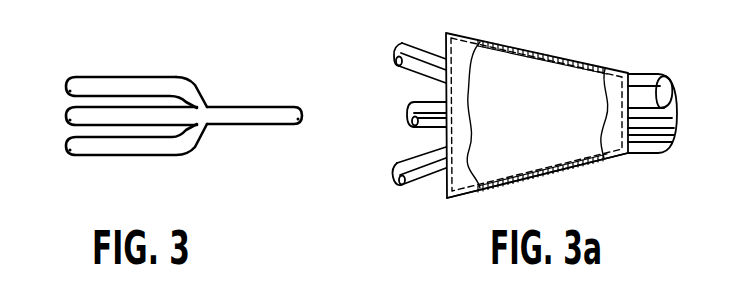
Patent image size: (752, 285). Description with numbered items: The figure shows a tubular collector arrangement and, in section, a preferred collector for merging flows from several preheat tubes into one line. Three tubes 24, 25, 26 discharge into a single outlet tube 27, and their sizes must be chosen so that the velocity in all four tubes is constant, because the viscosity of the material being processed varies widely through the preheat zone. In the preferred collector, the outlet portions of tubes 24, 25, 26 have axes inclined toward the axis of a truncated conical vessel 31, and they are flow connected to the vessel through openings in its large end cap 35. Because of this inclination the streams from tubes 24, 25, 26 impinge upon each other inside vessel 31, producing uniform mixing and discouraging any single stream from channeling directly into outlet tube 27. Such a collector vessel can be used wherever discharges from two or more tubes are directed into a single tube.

In FIG. 3, the tube 24 is at (142, 83).
In FIG. 3a, the tube 24 is at (401, 70).
In FIG. 3, the tube 25 is at (78, 110).
In FIG. 3a, the tube 25 is at (412, 128).
In FIG. 3, the tube 26 is at (136, 146).
In FIG. 3a, the tube 26 is at (419, 184).
In FIG. 3, the outlet tube 27 is at (237, 112).
In FIG. 3a, the outlet tube 27 is at (662, 145).
In FIG. 3a, the truncated conical vessel 31 is at (553, 70).
In FIG. 3a, the large end cap 35 is at (446, 198).